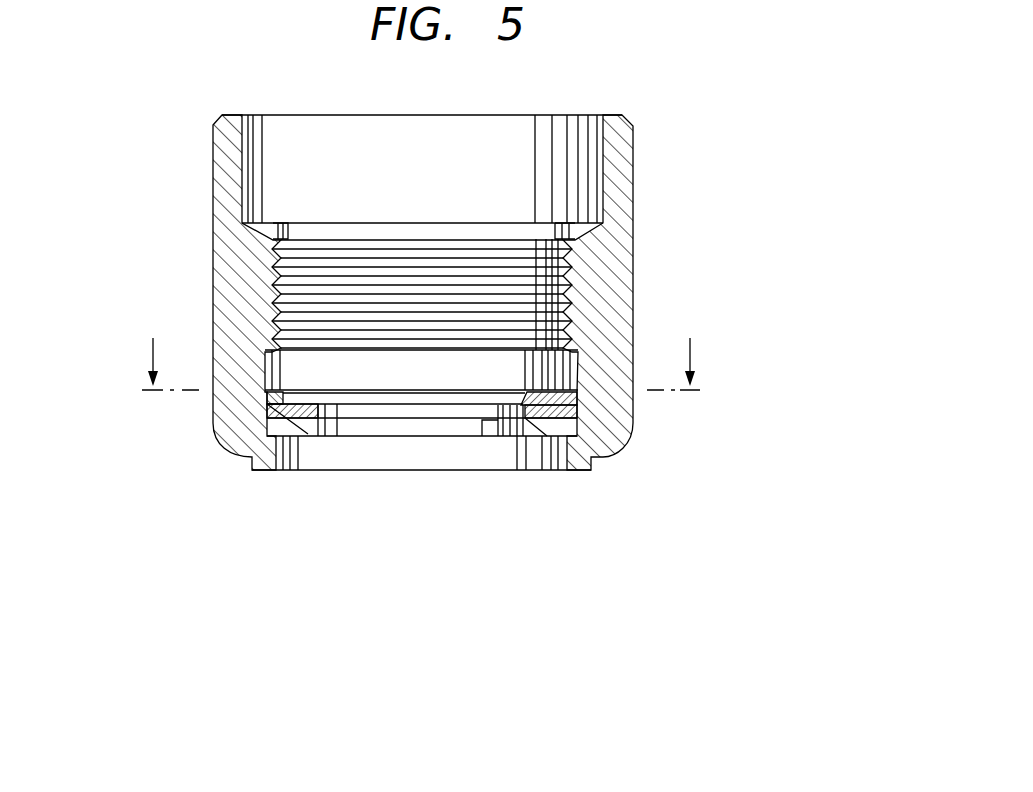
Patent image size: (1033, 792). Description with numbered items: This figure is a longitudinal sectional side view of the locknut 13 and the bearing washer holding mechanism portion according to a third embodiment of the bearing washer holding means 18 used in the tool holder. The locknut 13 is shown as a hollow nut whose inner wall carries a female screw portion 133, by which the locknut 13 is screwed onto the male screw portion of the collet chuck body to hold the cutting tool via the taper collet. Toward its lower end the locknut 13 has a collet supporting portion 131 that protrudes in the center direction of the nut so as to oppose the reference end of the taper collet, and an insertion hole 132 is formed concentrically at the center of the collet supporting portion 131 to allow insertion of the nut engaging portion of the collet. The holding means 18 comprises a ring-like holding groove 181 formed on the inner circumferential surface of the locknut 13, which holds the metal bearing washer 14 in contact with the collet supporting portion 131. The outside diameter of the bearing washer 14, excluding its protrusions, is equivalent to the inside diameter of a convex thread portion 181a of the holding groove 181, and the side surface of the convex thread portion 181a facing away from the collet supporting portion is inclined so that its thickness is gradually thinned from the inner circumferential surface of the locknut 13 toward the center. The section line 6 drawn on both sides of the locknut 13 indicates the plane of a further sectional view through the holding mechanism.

The locknut 13 is at (640, 157).
The female screw portion 133 is at (573, 272).
The holding means 18 is at (587, 398).
The holding groove 181 is at (580, 413).
The convex thread portion 181a is at (267, 398).
The bearing washer 14 is at (525, 418).
The collet supporting portion 131 is at (296, 437).
The insertion hole 132 is at (337, 437).
The section line 6 is at (424, 363).